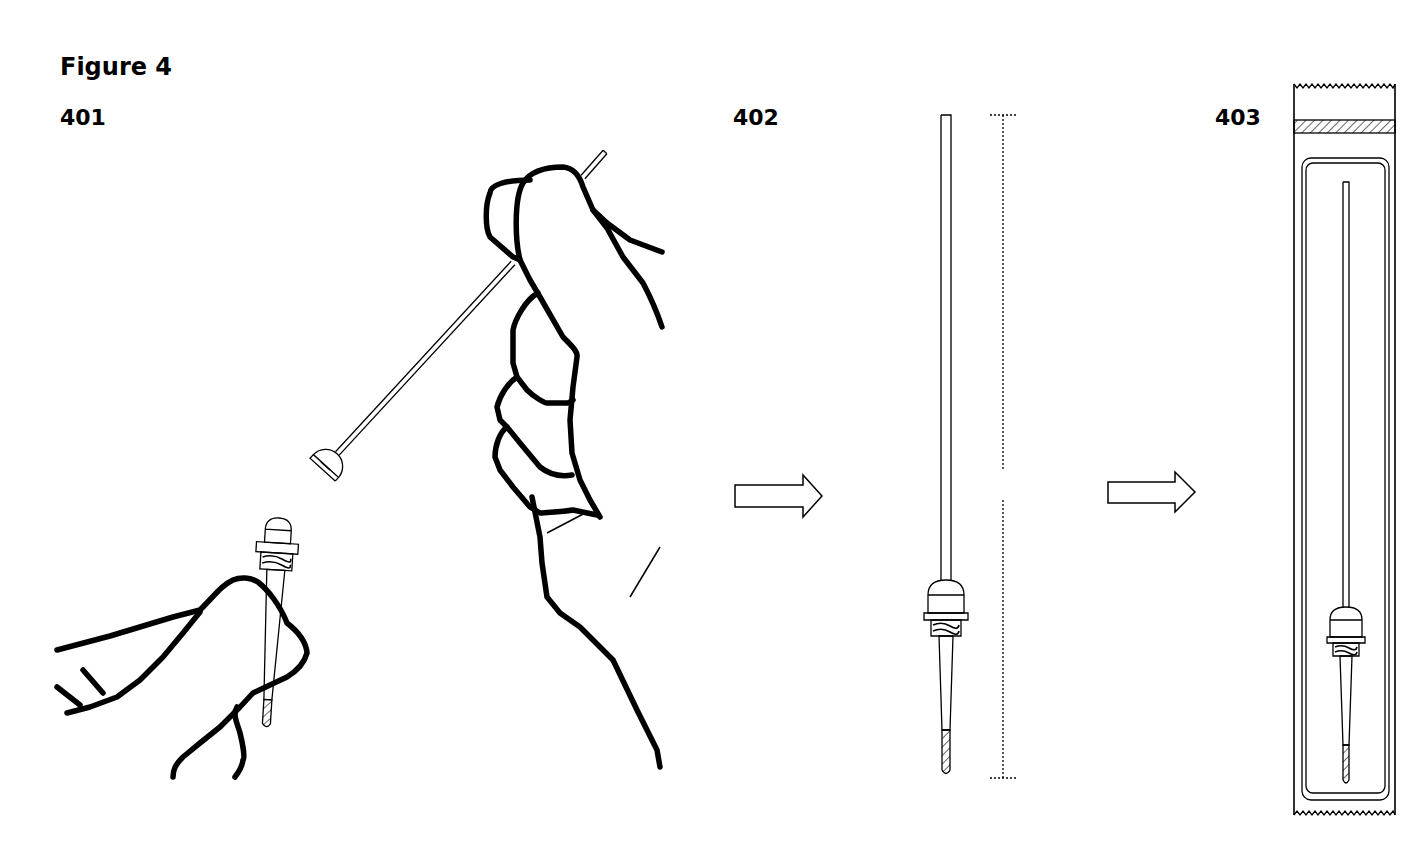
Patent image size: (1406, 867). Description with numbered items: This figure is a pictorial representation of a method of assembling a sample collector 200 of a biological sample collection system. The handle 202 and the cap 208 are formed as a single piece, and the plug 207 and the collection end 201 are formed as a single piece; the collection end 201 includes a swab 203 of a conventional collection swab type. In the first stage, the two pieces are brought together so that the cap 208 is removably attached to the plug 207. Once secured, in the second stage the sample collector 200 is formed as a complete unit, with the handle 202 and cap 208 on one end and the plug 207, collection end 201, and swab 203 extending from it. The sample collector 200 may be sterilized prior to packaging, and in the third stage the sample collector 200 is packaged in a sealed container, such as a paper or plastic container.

The sample collector 200 is at (1192, 449).
The collection end 201 is at (290, 584).
The handle 202 is at (406, 366).
The swab 203 is at (275, 720).
The plug 207 is at (298, 540).
The cap 208 is at (318, 440).